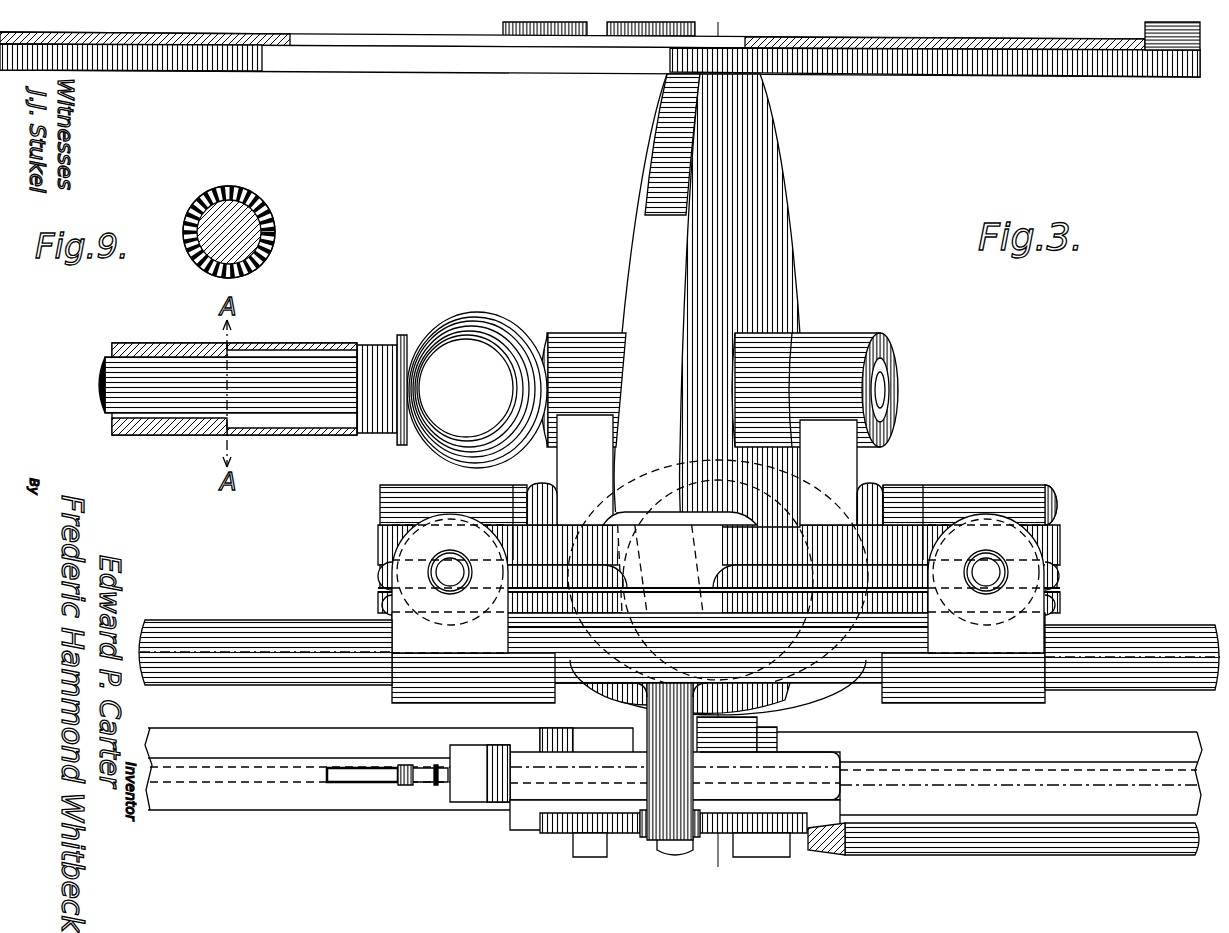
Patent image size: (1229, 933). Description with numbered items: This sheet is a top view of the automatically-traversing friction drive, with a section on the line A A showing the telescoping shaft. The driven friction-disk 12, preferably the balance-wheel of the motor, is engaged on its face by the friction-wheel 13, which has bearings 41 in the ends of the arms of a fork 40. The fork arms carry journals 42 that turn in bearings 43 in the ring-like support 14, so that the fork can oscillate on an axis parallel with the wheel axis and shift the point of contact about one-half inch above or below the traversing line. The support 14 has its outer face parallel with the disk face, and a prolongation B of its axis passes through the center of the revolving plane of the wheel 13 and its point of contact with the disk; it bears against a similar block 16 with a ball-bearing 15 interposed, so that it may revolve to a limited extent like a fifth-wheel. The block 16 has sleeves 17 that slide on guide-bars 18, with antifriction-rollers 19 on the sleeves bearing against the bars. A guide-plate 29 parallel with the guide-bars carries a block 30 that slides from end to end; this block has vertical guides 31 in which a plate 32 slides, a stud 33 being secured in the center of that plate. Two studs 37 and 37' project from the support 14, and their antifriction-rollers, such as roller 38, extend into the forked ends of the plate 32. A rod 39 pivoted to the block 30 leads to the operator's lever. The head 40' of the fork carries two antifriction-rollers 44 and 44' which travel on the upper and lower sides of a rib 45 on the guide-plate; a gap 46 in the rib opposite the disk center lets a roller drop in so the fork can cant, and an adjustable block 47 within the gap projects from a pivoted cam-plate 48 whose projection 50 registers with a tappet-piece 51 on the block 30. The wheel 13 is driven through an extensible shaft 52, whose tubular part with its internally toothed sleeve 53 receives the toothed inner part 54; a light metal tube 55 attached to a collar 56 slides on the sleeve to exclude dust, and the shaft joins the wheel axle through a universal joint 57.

In FIG. 3, the driven friction-disk 12 is at (471, 65).
In FIG. 3, the friction-wheel 13 is at (655, 180).
In FIG. 3, the axis B is at (722, 259).
In FIG. 3, the ring-like support 14 is at (378, 540).
In FIG. 3, the ball-bearing 15 is at (378, 587).
In FIG. 3, the block 16 is at (372, 604).
In FIG. 3, the sleeves 17 is at (468, 690).
In FIG. 3, the guide-bars 18 is at (248, 598).
In FIG. 3, the antifriction-rollers 19 is at (465, 610).
In FIG. 3, the guide-plate 29 is at (1018, 792).
In FIG. 3, the block 30 is at (770, 776).
In FIG. 3, the vertical guides 31 is at (580, 843).
In FIG. 3, the plate 32 is at (540, 830).
In FIG. 3, the stud 33 is at (681, 861).
In FIG. 3, the stud 37 is at (718, 597).
In FIG. 3, the stud 37' is at (785, 705).
In FIG. 3, the antifriction-roller 38 is at (657, 838).
In FIG. 3, the rod 39 is at (1075, 835).
In FIG. 3, the fork 40 is at (707, 470).
In FIG. 3, the head of fork 40' is at (597, 701).
In FIG. 3, the bearings 41 is at (588, 335).
In FIG. 3, the journals 42 is at (542, 486).
In FIG. 3, the bearings 43 is at (395, 486).
In FIG. 3, the antifriction-roller 44 is at (686, 761).
In FIG. 3, the antifriction-roller 44' is at (797, 738).
In FIG. 3, the rib 45 is at (304, 735).
In FIG. 3, the gap 46 is at (675, 776).
In FIG. 3, the adjustable block 47 is at (548, 757).
In FIG. 3, the cam-plate 48 is at (444, 783).
In FIG. 3, the projection 50 is at (397, 785).
In FIG. 3, the tappet-piece 51 is at (480, 773).
In FIG. 3, the extensible shaft 52 is at (362, 345).
In FIG. 9, the tubular part (sleeve) 53 is at (276, 238).
In FIG. 3, the tubular part (sleeve) 53 is at (207, 425).
In FIG. 9, the inner part 54 is at (265, 208).
In FIG. 3, the inner part 54 is at (287, 410).
In FIG. 9, the metal tube 55 is at (219, 226).
In FIG. 3, the metal tube 55 is at (268, 335).
In FIG. 3, the collar 56 is at (403, 340).
In FIG. 3, the universal joint 57 is at (477, 390).